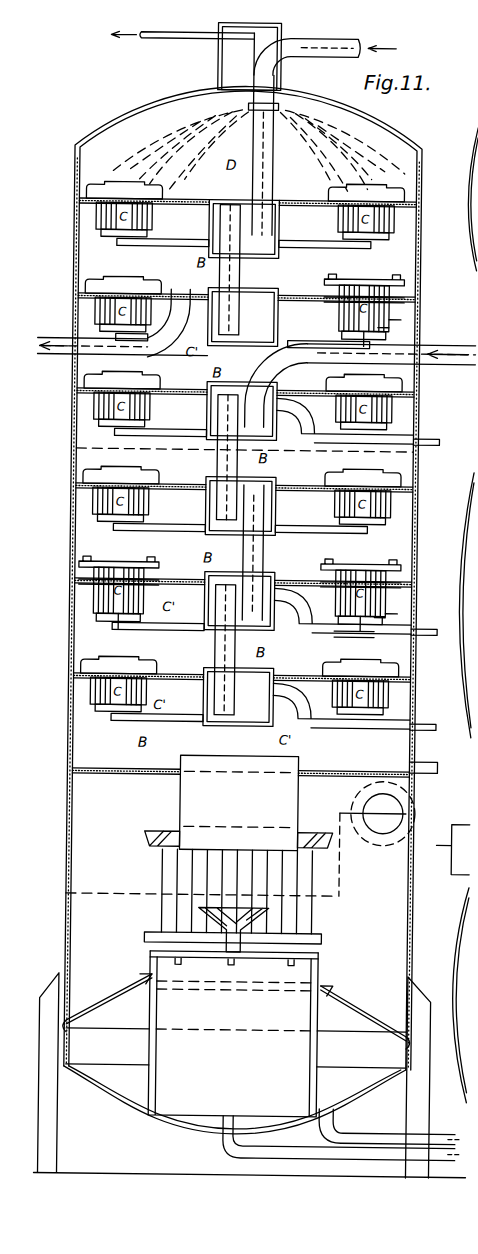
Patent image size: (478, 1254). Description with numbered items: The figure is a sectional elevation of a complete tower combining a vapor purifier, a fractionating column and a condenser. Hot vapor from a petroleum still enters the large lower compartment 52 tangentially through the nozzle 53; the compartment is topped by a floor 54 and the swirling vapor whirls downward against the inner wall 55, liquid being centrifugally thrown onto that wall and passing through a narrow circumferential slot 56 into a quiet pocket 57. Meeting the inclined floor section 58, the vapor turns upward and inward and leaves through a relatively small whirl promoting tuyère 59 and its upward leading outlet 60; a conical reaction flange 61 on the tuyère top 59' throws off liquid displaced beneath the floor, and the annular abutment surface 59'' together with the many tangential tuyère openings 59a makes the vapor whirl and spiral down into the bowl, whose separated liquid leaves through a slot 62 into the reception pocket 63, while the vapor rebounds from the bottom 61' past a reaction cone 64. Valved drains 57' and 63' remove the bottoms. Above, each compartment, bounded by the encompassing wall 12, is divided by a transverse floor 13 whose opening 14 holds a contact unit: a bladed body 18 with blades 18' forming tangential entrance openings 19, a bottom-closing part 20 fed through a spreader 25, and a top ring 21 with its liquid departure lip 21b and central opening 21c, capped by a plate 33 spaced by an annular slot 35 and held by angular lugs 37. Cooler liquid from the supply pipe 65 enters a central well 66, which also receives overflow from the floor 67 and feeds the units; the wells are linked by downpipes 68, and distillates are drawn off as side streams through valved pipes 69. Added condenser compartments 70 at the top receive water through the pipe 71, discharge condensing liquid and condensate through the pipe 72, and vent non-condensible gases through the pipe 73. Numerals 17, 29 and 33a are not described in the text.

The encompassing wall 12 is at (80, 449).
The transverse floor 13 is at (58, 892).
The opening 14 is at (341, 322).
The mounting bracket 17 is at (334, 296).
The body portion 18 is at (226, 469).
The blades 18' is at (415, 472).
The tangential gas entrance openings 19 is at (408, 572).
The bottom-closing part 20 is at (392, 480).
The top member 21 is at (392, 290).
The liquid departure lip 21b is at (384, 564).
The central opening 21c is at (358, 288).
The spreader 25 is at (368, 636).
The motor casing 29 is at (406, 299).
The plate 33 is at (395, 564).
The pump inlet 33a is at (330, 586).
The annular slot 35 is at (362, 566).
The angular lugs 37 is at (366, 564).
The lower compartment 52 is at (241, 885).
The nozzle 53 is at (377, 839).
The floor 54 is at (348, 771).
The inner wall 55 is at (78, 940).
The circumferential slot 56 is at (80, 1018).
The quiet pocket 57 is at (236, 1060).
The valved drain 57' is at (389, 1127).
The inclined floor section 58 is at (128, 990).
The whirl promoting tuyère 59 is at (236, 891).
The tuyère top 59' is at (321, 859).
The annular abutment surface 59'' is at (255, 862).
The tangential tuyère openings 59a is at (180, 887).
The outlet 60 is at (238, 802).
The reaction flange 61 is at (239, 873).
The bottom of the bowl 61' is at (261, 992).
The circumferential slot 62 is at (330, 975).
The reception pocket 63 is at (233, 1034).
The valved drain 63' is at (341, 1138).
The reaction cone 64 is at (233, 929).
The supply pipe 65 is at (440, 343).
The central well 66 is at (280, 242).
The floor 67 is at (307, 392).
The downpipes 68 is at (241, 270).
The valved pipes 69 is at (440, 435).
The condenser floors and compartments 70 is at (310, 200).
The pipe 71 is at (274, 144).
The pipe 72 is at (122, 322).
The pipe 73 is at (185, 39).